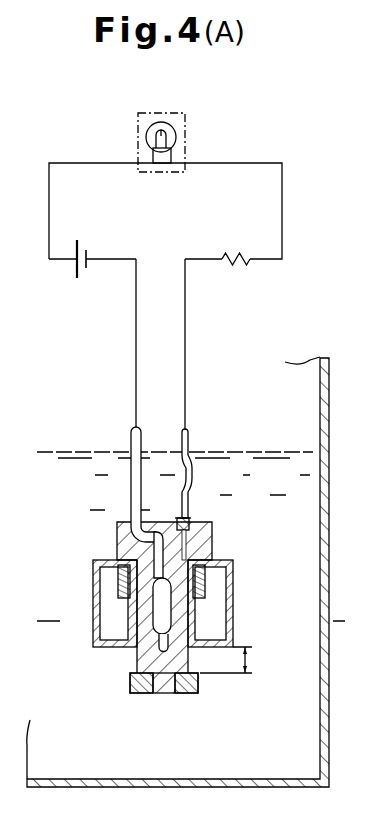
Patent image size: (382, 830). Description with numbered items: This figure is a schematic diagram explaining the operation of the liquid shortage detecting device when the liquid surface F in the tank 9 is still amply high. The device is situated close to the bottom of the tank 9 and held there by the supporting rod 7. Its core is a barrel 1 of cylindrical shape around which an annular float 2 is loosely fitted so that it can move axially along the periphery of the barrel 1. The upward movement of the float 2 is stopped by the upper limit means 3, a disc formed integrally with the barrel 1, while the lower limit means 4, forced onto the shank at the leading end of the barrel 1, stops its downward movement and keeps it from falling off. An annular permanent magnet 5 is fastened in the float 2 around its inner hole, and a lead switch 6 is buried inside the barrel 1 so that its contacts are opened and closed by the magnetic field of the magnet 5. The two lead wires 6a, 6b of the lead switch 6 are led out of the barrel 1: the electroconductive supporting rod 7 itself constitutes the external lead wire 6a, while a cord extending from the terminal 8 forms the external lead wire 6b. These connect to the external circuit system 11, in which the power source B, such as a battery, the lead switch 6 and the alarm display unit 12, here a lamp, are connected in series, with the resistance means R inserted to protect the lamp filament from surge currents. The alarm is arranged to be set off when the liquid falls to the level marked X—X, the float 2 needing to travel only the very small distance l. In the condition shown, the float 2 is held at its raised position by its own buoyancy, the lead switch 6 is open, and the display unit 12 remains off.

The barrel 1 is at (150, 655).
The annular float 2 is at (247, 567).
The upper limit means 3 is at (125, 543).
The lower limit means 4 is at (188, 693).
The annular permanent magnet 5 is at (203, 592).
The lead switch 6 is at (158, 608).
The supporting rod 7 is at (131, 440).
The terminal 8 is at (189, 518).
The tank 9 is at (329, 411).
The external circuit system 11 is at (242, 158).
The alarm display unit 12 is at (138, 127).
The external lead wire 6a is at (134, 344).
The external lead wire 6b is at (187, 344).
The power source B is at (84, 251).
The resistance means R is at (228, 257).
The liquid surface F is at (164, 475).
The liquid level X— X is at (189, 623).
The distance l is at (228, 660).